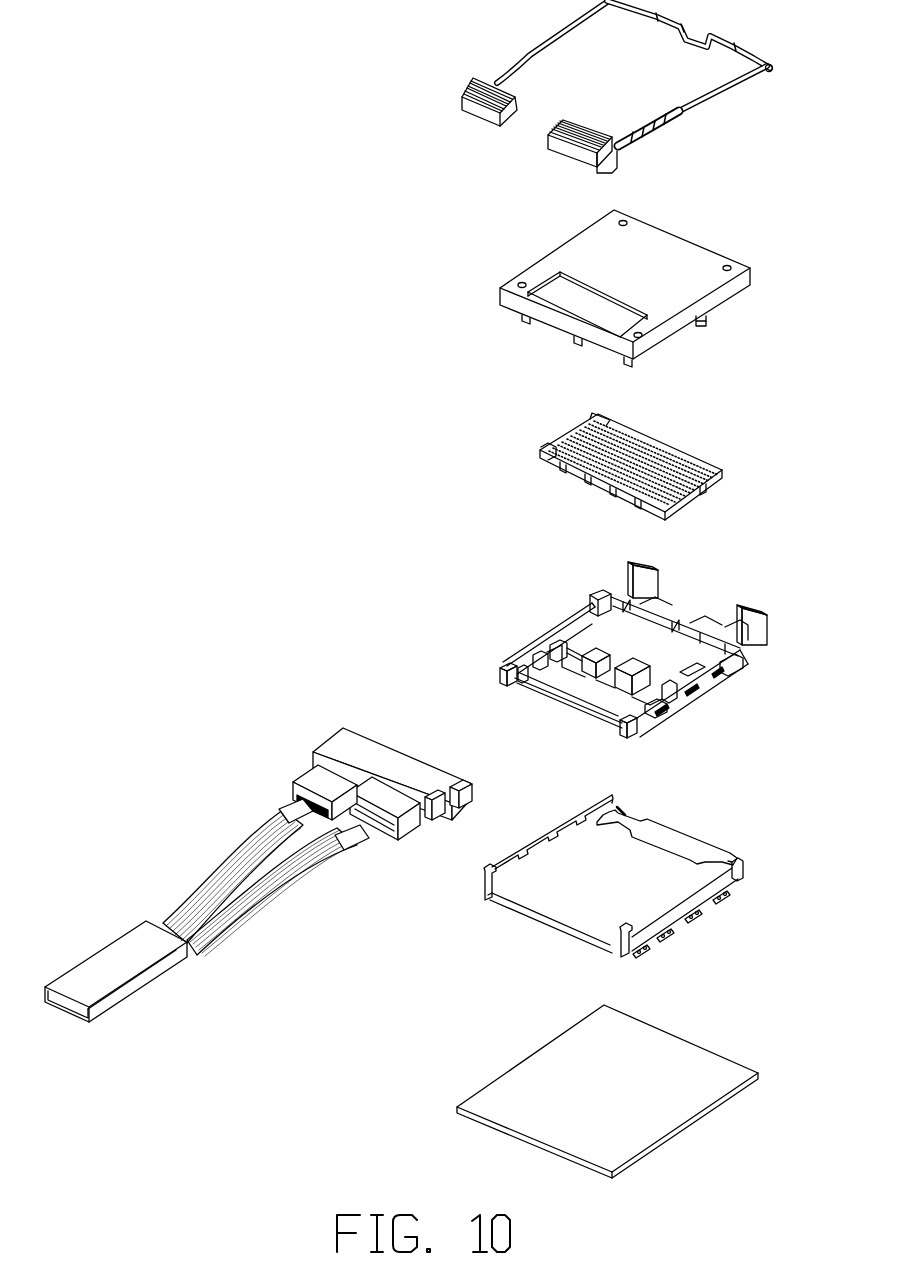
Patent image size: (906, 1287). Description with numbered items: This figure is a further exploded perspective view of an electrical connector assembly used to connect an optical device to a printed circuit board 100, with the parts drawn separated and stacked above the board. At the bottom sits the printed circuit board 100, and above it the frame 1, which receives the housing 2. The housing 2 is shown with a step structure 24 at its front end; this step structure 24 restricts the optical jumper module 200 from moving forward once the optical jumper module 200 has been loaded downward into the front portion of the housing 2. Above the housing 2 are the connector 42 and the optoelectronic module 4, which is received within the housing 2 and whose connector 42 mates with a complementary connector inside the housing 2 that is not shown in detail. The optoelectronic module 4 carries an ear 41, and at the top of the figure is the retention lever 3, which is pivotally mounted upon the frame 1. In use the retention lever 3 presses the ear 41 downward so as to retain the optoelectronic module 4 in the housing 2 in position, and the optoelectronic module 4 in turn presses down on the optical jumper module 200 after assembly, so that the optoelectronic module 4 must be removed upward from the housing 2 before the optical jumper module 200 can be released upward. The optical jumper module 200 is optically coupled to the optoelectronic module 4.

The frame 1 is at (570, 795).
The housing 2 is at (564, 592).
The step structure 24 is at (540, 660).
The retention lever 3 is at (510, 36).
The optoelectronic module 4 is at (538, 234).
The ear 41 is at (703, 327).
The connector 42 is at (699, 483).
The printed circuit board 100 is at (510, 1040).
The optical jumper module 200 is at (294, 749).